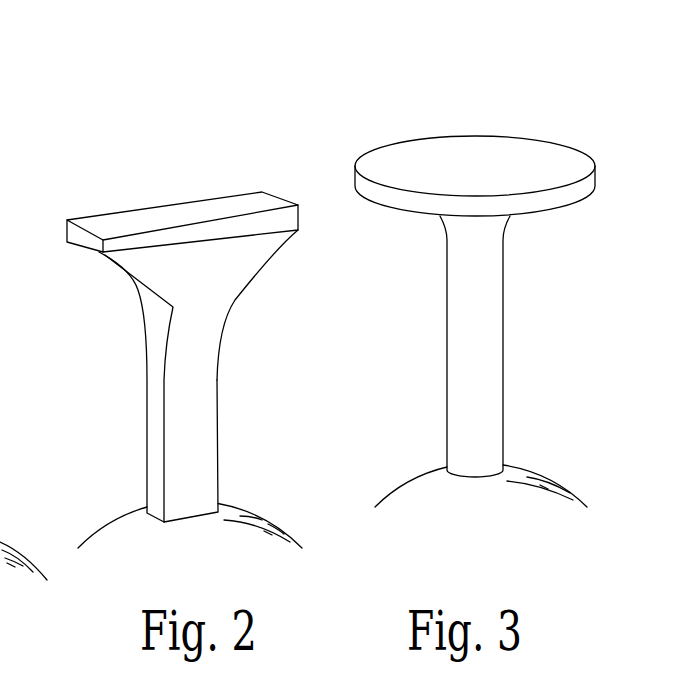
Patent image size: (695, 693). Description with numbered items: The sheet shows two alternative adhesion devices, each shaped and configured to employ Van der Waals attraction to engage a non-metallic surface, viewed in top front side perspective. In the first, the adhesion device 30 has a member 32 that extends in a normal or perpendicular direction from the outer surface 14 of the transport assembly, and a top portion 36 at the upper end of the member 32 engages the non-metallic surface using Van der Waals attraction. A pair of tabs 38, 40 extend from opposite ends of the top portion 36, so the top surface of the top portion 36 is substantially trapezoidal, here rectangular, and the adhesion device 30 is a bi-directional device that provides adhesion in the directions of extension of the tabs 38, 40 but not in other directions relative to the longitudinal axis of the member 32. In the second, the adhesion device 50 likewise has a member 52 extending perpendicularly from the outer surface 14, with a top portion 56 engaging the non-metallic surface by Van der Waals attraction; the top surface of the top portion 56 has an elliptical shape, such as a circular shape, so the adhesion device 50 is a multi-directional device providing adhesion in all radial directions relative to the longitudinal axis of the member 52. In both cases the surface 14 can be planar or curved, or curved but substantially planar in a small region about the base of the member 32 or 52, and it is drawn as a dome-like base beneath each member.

In FIG. 2, the outer surface 14 is at (98, 525).
In FIG. 3, the outer surface 14 is at (398, 483).
In FIG. 2, the adhesion device 30 is at (115, 100).
In FIG. 2, the member 32 is at (177, 395).
In FIG. 2, the top portion 36 is at (198, 200).
In FIG. 2, the tab 38 is at (90, 242).
In FIG. 2, the tab 40 is at (272, 230).
In FIG. 3, the adhesion device 50 is at (357, 63).
In FIG. 3, the member 52 is at (447, 335).
In FIG. 3, the top portion 56 is at (477, 137).